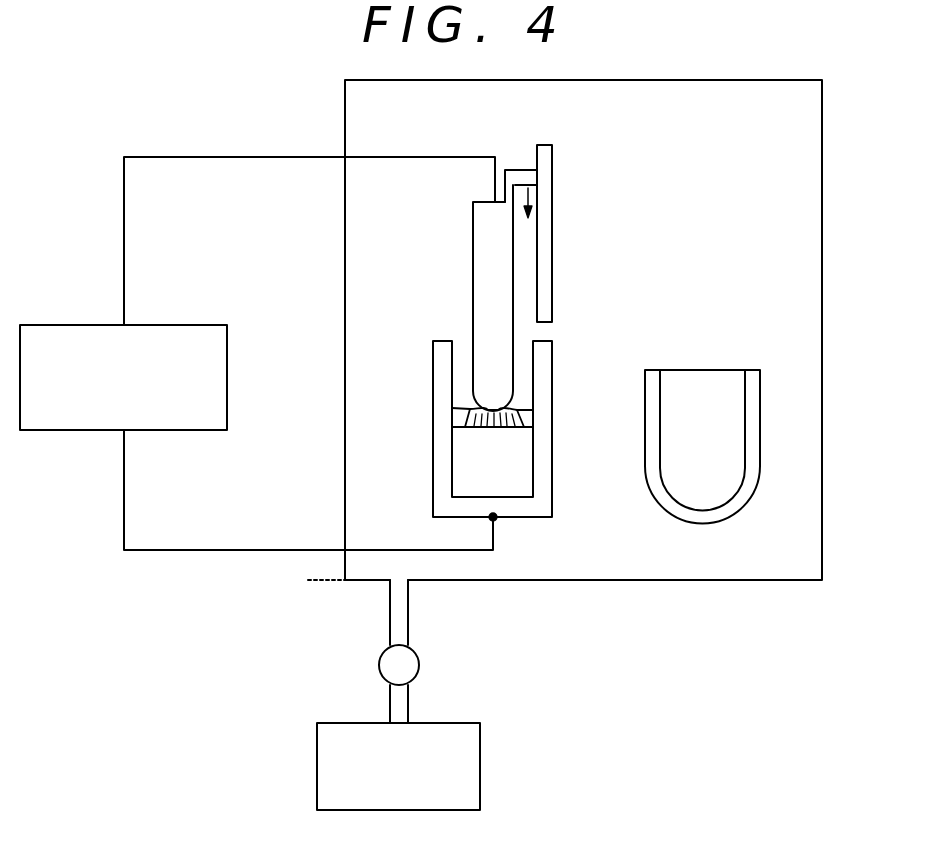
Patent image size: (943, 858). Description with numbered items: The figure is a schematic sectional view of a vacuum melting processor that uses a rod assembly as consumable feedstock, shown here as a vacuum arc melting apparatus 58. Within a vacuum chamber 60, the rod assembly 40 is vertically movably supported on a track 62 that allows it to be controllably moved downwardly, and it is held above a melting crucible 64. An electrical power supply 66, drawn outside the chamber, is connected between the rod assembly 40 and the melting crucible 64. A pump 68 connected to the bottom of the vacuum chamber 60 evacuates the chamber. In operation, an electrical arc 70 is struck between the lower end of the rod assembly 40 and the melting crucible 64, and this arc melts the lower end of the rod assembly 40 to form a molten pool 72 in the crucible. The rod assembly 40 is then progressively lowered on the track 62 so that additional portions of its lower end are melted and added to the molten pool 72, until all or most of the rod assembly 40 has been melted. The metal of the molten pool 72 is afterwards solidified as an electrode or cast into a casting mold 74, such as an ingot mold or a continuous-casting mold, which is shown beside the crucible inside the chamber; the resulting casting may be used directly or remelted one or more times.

The vacuum arc melting apparatus 58 is at (312, 92).
The vacuum chamber 60 is at (822, 122).
The track 62 is at (552, 190).
The rod assembly 40 is at (513, 258).
The melting crucible 64 is at (528, 508).
The electrical power supply 66 is at (53, 432).
The pump 68 is at (317, 739).
The electrical arc 70 is at (470, 409).
The molten pool 72 is at (478, 463).
The casting mold 74 is at (760, 420).